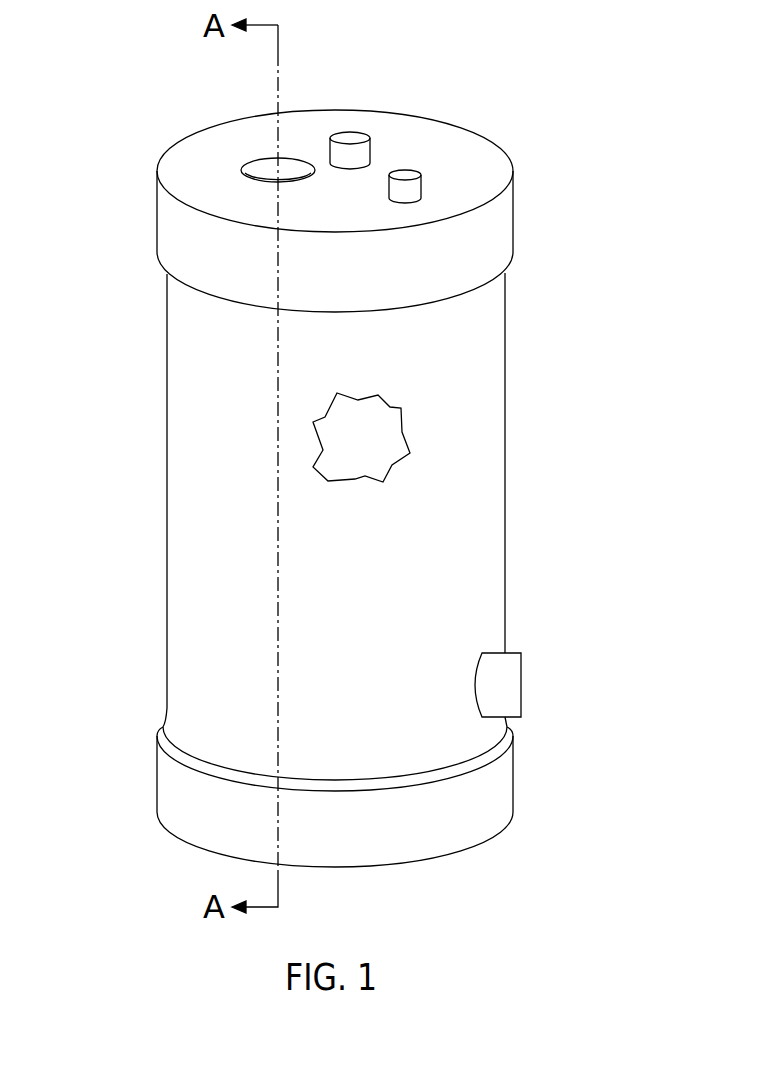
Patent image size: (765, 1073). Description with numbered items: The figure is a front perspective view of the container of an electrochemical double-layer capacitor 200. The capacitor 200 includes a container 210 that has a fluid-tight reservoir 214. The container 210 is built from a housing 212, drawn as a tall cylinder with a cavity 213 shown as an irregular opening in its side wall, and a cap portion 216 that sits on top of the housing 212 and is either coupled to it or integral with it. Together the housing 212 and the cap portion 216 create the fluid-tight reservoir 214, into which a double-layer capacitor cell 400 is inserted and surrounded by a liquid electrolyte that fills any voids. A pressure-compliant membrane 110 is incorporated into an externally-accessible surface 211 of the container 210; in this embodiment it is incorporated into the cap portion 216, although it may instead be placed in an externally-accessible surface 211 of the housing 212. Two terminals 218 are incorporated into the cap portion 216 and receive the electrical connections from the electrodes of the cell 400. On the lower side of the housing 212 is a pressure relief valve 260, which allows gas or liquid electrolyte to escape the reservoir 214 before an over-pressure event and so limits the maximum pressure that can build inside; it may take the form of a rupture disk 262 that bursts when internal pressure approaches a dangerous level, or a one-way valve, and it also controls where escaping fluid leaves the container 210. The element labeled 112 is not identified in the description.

The electrochemical double-layer capacitor 200 is at (548, 170).
The pressure-compliant membrane 110 is at (237, 168).
The cap sidewall 112 is at (263, 220).
The cap portion 216 is at (252, 144).
The terminals 218 is at (352, 134).
The container 210 is at (148, 683).
The externally-accessible surface 211 is at (207, 135).
The housing 212 is at (167, 578).
The cavity 213 is at (380, 428).
The double-layer capacitor cell 400 is at (337, 428).
The fluid-tight reservoir 214 is at (362, 465).
The pressure relief valve 260 is at (525, 677).
The rupture disk 262 is at (521, 702).